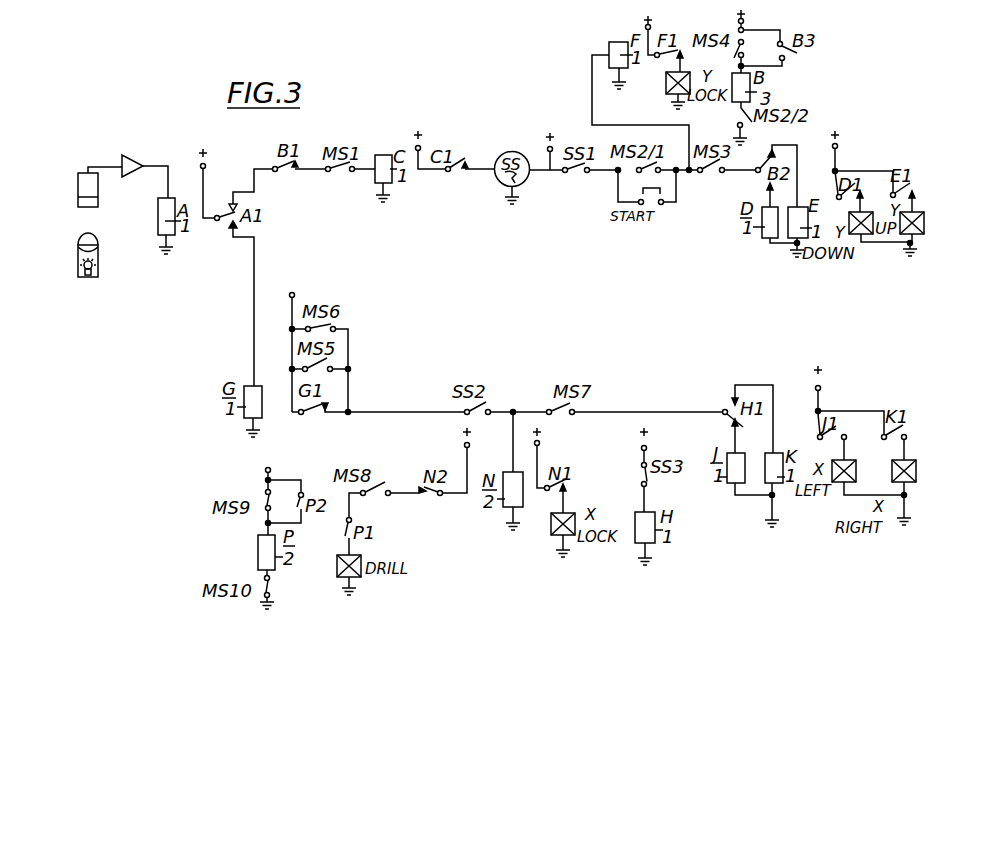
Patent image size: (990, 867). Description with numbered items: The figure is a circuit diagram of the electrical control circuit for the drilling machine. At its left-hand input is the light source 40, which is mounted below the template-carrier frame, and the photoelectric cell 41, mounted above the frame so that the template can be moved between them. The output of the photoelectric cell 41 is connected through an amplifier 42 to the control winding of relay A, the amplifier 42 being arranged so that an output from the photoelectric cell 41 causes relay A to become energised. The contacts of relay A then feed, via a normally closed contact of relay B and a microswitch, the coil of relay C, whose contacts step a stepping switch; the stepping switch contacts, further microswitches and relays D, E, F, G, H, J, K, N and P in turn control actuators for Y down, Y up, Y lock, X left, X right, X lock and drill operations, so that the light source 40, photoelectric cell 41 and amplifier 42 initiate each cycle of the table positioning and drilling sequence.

The light source 40 is at (78, 271).
The photoelectric cell 41 is at (85, 189).
The amplifier 42 is at (129, 163).